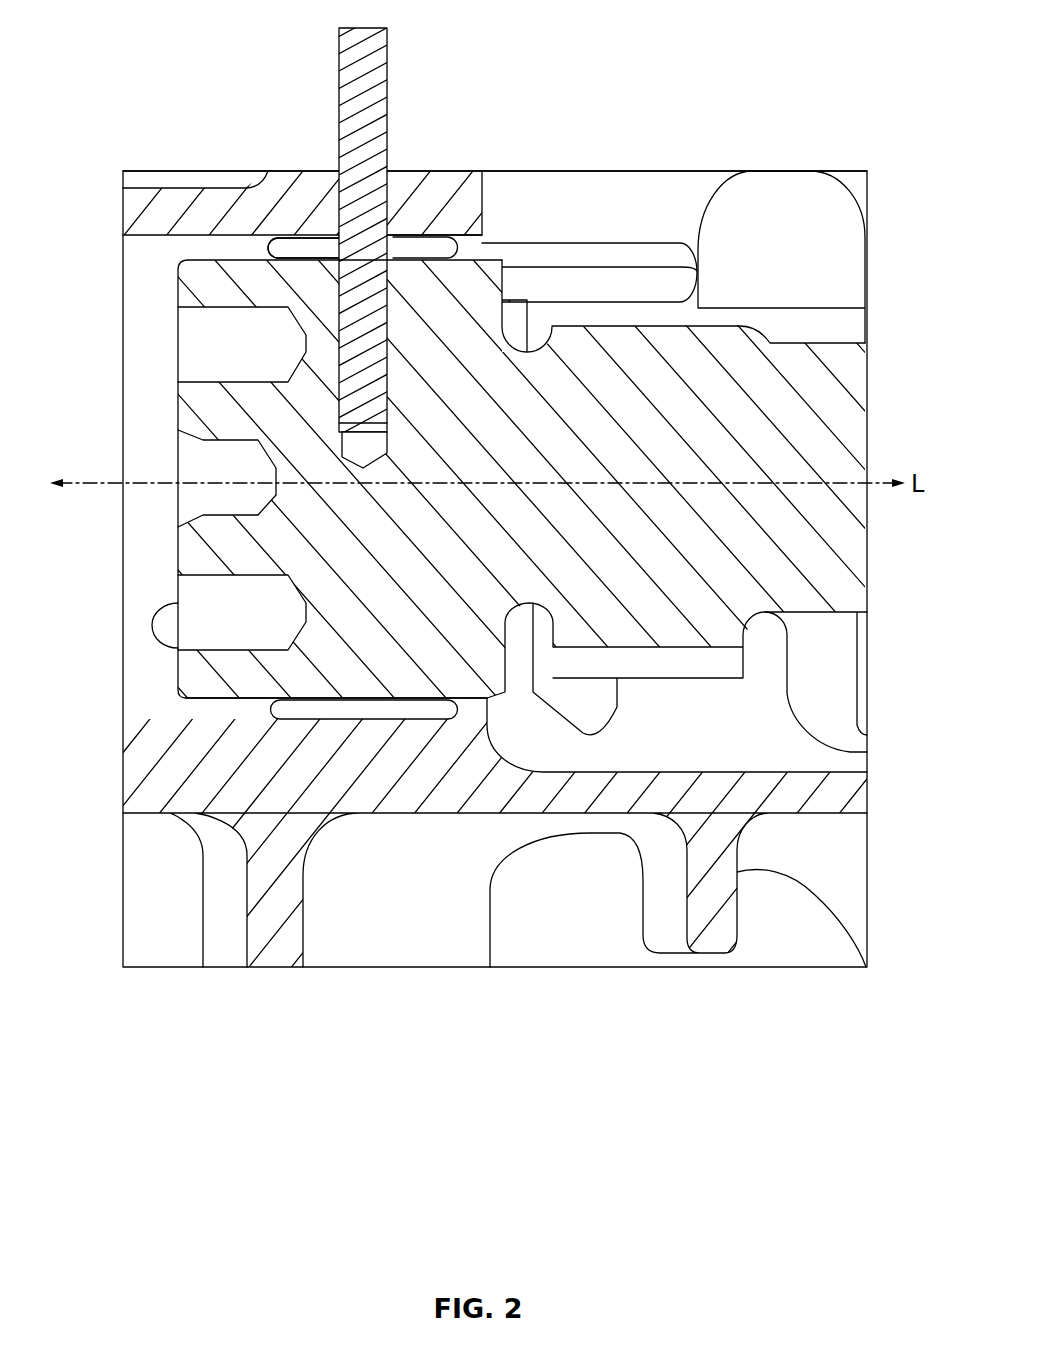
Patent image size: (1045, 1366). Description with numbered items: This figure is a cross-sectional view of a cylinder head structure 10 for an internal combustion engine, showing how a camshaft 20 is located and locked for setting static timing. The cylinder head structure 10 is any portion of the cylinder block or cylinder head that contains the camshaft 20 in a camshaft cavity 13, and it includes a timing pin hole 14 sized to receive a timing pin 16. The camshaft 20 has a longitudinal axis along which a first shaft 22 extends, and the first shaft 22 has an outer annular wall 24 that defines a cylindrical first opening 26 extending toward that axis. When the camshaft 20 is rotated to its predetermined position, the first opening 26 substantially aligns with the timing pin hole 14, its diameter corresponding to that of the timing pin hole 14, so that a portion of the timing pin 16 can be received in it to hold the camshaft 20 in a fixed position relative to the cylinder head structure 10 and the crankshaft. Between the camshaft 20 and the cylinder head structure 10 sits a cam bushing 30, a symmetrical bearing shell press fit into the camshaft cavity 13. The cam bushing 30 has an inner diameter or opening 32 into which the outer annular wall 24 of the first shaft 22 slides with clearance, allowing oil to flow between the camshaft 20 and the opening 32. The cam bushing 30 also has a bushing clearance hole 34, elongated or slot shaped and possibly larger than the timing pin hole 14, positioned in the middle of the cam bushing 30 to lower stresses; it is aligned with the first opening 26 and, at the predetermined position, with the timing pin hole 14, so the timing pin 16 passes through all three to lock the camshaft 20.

The cylinder head structure 10 is at (429, 197).
The camshaft cavity 13 is at (150, 337).
The timing pin hole 14 is at (388, 177).
The timing pin 16 is at (377, 44).
The camshaft 20 is at (838, 392).
The first shaft 22 is at (462, 290).
The outer annular wall 24 is at (220, 276).
The first opening 26 is at (337, 247).
The cam bushing 30 is at (443, 250).
The opening 32 is at (287, 695).
The bushing clearance hole 34 is at (413, 232).